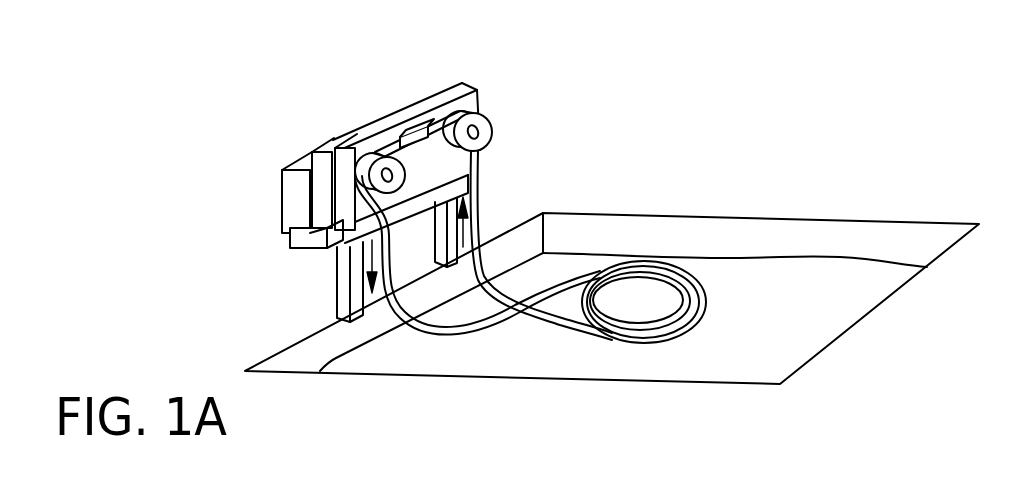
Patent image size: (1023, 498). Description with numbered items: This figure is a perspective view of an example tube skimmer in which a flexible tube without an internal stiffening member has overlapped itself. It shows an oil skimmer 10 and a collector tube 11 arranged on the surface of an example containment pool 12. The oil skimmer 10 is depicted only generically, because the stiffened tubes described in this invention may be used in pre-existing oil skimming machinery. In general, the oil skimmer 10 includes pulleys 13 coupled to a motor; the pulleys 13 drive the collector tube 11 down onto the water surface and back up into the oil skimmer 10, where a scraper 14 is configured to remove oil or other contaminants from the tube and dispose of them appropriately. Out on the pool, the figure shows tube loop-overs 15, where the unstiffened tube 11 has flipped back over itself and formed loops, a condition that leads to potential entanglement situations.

The oil skimmer 10 is at (462, 88).
The collector tube 11 is at (479, 190).
The containment pool 12 is at (778, 237).
The pulleys 13 is at (371, 160).
The scraper 14 is at (423, 130).
The tube loop-overs 15 is at (705, 312).